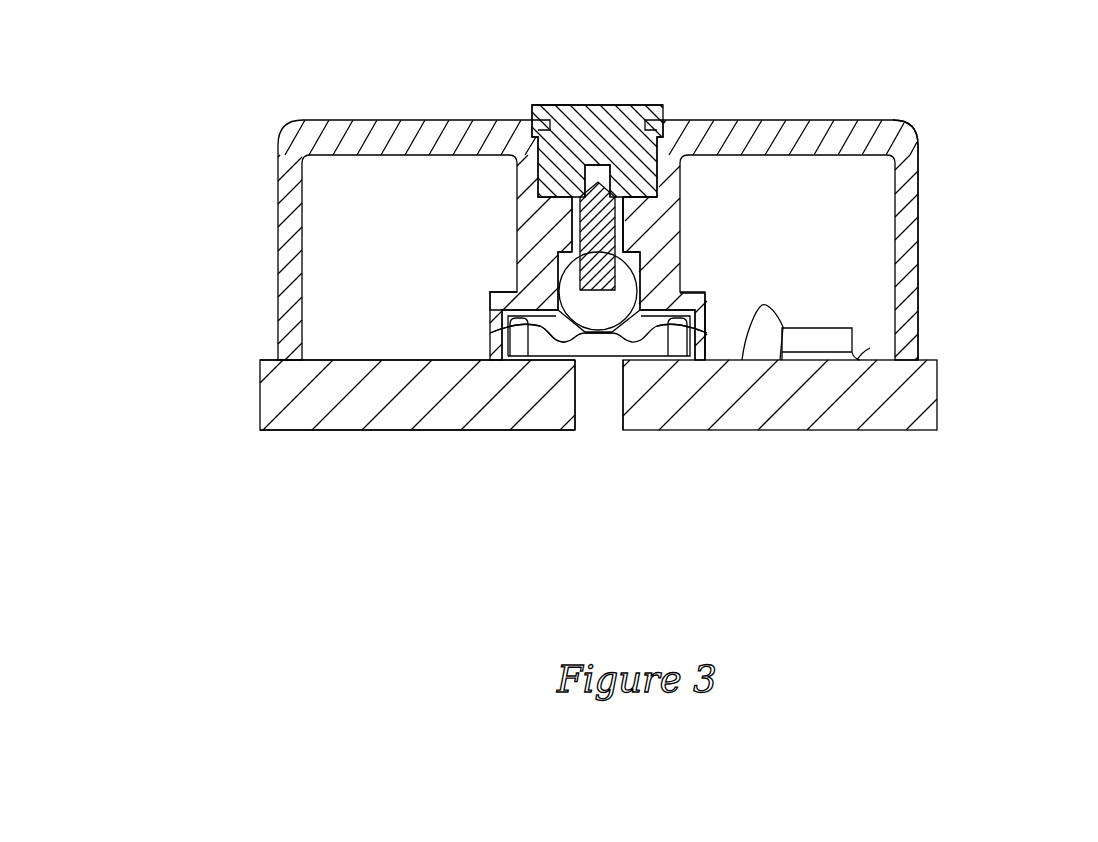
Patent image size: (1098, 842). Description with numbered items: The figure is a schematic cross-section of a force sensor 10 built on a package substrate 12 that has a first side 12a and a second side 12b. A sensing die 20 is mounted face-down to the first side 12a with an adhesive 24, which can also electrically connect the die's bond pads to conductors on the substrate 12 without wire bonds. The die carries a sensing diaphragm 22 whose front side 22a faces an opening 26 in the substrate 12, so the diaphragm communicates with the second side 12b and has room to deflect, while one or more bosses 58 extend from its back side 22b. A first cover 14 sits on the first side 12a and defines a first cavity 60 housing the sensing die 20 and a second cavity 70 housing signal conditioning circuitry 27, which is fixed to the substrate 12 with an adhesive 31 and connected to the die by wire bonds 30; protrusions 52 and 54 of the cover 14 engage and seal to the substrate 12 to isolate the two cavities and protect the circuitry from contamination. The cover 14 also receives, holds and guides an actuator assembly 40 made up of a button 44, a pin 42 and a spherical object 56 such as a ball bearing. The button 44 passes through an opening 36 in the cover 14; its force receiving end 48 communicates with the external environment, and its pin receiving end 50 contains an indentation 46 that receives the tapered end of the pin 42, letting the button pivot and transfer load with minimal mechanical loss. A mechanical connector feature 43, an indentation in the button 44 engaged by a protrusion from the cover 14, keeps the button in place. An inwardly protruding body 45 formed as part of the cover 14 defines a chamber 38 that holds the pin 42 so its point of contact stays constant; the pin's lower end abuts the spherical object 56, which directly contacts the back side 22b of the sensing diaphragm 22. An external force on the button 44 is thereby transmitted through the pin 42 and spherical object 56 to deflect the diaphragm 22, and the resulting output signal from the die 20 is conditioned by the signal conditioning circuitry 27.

The force sensor 10 is at (985, 140).
The package substrate 12 is at (260, 393).
The first side of the substrate 12a is at (270, 358).
The second side of the substrate 12b is at (270, 430).
The first cover 14 is at (920, 232).
The sensing die 20 is at (692, 318).
The sensing diaphragm 22 is at (647, 342).
The front side of the sensing diaphragm 22a is at (598, 357).
The back side of the sensing diaphragm 22b is at (545, 340).
The adhesive 24 is at (537, 345).
The opening 26 is at (607, 425).
The signal conditioning circuitry 27 is at (820, 328).
The wire bonds 30 is at (762, 305).
The adhesive 31 is at (858, 358).
The opening 36 is at (660, 188).
The chamber 38 is at (565, 262).
The actuator assembly 40 is at (688, 83).
The pin 42 is at (580, 214).
The mechanical connector feature 43 is at (532, 127).
The button 44 is at (548, 105).
The inwardly protruding body 45 is at (628, 225).
The indentation 46 is at (604, 140).
The force receiving end 48 is at (612, 70).
The pin receiving end 50 is at (645, 200).
The protrusion 52 is at (492, 306).
The protrusion 54 is at (700, 292).
The spherical object 56 is at (558, 266).
The boss 58 is at (515, 320).
The first cavity 60 is at (667, 312).
The second cavity 70 is at (835, 236).